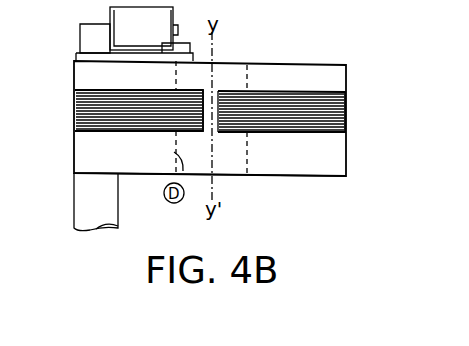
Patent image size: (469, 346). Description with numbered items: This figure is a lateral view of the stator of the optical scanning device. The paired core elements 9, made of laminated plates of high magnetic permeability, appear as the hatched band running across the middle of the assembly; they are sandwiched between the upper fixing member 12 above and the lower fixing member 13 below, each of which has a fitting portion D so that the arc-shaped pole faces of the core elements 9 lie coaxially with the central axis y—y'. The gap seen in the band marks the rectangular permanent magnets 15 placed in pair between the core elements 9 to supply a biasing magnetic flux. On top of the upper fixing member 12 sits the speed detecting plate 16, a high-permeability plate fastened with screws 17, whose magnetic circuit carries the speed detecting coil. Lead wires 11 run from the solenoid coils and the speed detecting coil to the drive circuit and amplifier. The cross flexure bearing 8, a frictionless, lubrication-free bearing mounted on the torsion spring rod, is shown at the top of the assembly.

The cross flexure bearing 8 is at (123, 19).
The paired core elements 9 is at (76, 104).
The lead wires 11 is at (78, 198).
The upper fixing member 12 is at (313, 78).
The lower fixing member 13 is at (287, 167).
The rectangular permanent magnets 15 is at (210, 97).
The speed detecting plate 16 is at (85, 57).
The screws 17 is at (190, 18).